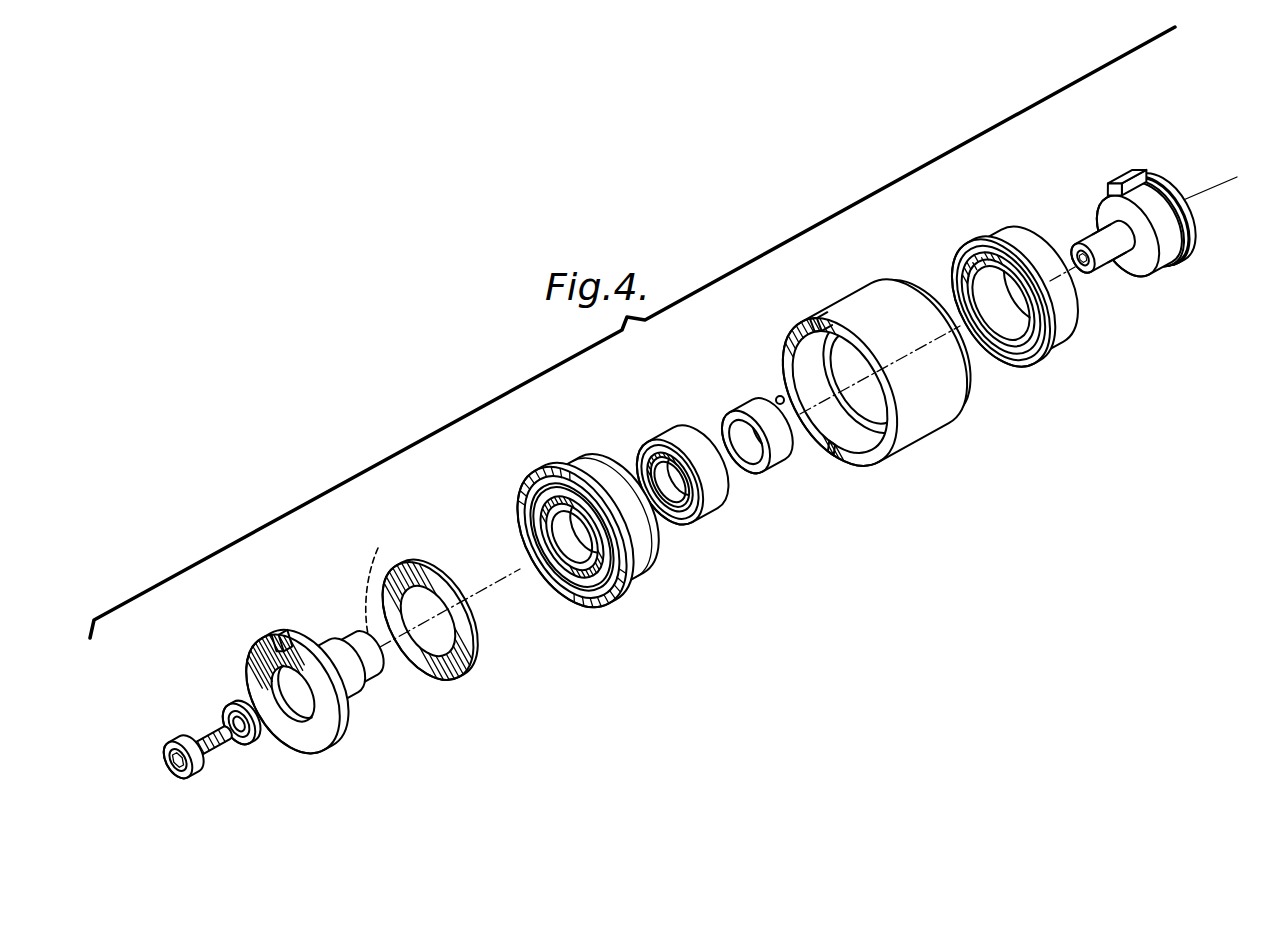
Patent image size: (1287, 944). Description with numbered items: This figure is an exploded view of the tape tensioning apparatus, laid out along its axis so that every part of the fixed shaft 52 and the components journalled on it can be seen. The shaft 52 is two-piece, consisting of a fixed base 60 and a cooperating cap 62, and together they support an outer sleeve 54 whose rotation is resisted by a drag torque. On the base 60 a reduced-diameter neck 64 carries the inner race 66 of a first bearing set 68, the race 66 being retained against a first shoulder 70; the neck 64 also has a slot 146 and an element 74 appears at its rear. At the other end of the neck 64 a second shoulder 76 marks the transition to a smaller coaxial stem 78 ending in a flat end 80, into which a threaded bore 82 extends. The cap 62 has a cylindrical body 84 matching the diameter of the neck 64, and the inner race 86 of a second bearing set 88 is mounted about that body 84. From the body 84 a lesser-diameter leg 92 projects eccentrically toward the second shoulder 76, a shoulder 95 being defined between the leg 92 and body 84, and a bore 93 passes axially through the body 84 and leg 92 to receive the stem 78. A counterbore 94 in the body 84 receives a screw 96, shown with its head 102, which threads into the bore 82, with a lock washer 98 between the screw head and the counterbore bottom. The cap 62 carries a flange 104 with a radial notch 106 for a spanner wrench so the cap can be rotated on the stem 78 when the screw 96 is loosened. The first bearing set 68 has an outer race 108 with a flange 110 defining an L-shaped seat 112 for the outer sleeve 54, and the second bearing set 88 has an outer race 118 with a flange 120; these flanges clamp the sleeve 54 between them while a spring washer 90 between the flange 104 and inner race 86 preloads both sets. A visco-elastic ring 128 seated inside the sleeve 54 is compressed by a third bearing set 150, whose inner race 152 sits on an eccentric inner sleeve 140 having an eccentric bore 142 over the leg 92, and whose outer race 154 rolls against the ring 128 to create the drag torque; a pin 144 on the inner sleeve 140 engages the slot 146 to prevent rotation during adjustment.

The fixed shaft 52 is at (1203, 192).
The outer sleeve 54 is at (892, 399).
The fixed base 60 is at (1139, 224).
The cap 62 is at (331, 673).
The neck 64 is at (1105, 163).
The inner race 66 is at (1018, 335).
The first bearing set 68 is at (1035, 292).
The first shoulder 70 is at (1183, 265).
The flange ring 74 is at (1172, 236).
The second shoulder 76 is at (1135, 278).
The stem 78 is at (1097, 240).
The flat end 80 is at (1088, 258).
The threaded coaxial bore 82 is at (1081, 256).
The cylindrical body 84 is at (363, 707).
The inner race 86 is at (588, 556).
The second bearing set 88 is at (607, 515).
The spring washer 90 is at (478, 662).
The leg 92 is at (377, 670).
The bore 93 is at (359, 589).
The counterbore 94 is at (308, 712).
The shoulder 95 is at (343, 632).
The screw 96 is at (158, 739).
The lock washer 98 is at (232, 703).
The screw head 102 is at (173, 744).
The flange 104 is at (260, 644).
The notch 106 is at (307, 630).
The outer race 108 is at (1048, 345).
The flange 110 is at (1078, 340).
The L-shaped seat 112 is at (992, 238).
The outer race 118 is at (650, 557).
The flange 120 is at (572, 470).
The visco-elastic ring 128 is at (876, 450).
The inner eccentric sleeve 140 is at (773, 463).
The inner bore 142 is at (781, 454).
The pin 144 is at (778, 397).
The slot 146 is at (1110, 200).
The third bearing set 150 is at (727, 483).
The inner race 152 is at (693, 517).
The outer race 154 is at (718, 503).